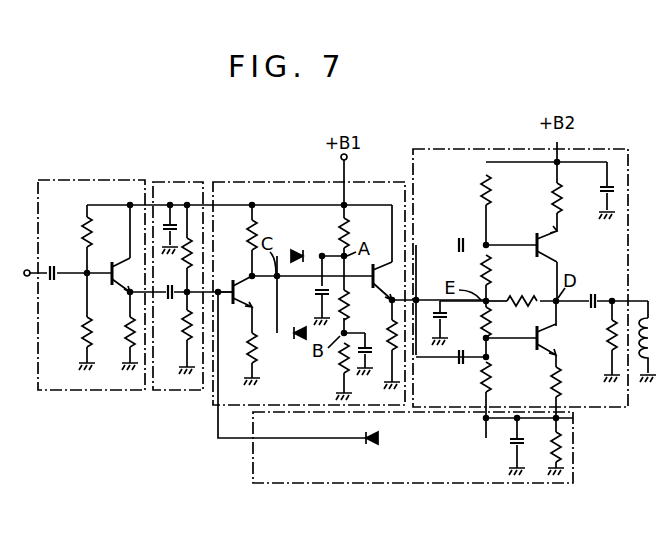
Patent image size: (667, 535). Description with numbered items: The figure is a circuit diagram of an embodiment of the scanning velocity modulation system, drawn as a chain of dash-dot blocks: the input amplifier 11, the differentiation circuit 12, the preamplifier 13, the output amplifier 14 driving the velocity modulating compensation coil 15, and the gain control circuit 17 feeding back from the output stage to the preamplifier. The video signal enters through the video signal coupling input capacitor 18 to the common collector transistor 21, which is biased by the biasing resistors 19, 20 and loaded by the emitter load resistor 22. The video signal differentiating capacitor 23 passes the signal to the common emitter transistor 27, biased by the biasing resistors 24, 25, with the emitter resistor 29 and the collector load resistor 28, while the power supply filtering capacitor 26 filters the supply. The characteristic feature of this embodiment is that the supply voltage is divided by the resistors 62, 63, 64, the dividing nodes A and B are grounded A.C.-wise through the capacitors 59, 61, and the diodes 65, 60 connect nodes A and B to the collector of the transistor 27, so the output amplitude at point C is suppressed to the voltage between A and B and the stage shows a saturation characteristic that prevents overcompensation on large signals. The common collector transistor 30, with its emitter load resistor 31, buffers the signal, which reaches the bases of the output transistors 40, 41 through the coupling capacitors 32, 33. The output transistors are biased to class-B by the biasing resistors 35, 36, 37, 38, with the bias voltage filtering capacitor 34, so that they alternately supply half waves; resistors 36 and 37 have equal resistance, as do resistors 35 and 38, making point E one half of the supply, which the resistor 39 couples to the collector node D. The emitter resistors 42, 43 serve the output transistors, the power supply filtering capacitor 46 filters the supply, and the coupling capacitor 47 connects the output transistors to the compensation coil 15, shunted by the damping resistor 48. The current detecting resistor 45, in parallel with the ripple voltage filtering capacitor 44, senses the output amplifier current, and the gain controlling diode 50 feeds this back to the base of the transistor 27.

The amplifier 11 is at (77, 180).
The differentiation circuit 12 is at (162, 182).
The preamplifier 13 is at (282, 182).
The output amplifier 14 is at (478, 149).
The velocity modulating compensation coil 15 is at (646, 321).
The gain control circuit 17 is at (253, 466).
The video signal coupling input capacitor 18 is at (53, 266).
The biasing resistor 19 is at (80, 325).
The biasing resistor 20 is at (91, 232).
The common collector transistor 21 is at (121, 262).
The emitter load resistor 22 is at (126, 335).
The video signal differentiating capacitor 23 is at (169, 299).
The biasing resistor 24 is at (184, 256).
The biasing resistor 25 is at (184, 331).
The power supply filtering capacitor 26 is at (168, 223).
The common emitter transistor 27 is at (240, 293).
The collector load resistor 28 is at (250, 234).
The emitter resistor 29 is at (250, 347).
The common collector transistor 30 is at (380, 284).
The emitter load resistor 31 is at (396, 370).
The coupling capacitor 32 is at (460, 240).
The coupling capacitor 33 is at (462, 362).
The bias voltage filtering capacitor 34 is at (446, 319).
The biasing resistor 35 is at (480, 187).
The biasing resistor 36 is at (480, 273).
The biasing resistor 37 is at (492, 319).
The biasing resistor 38 is at (492, 377).
The biasing resistor 39 is at (531, 298).
The output transistor 40 is at (553, 246).
The output transistor 41 is at (546, 339).
The emitter resistor 42 is at (551, 191).
The emitter resistor 43 is at (562, 385).
The ripple voltage filtering capacitor 44 is at (506, 443).
The current detecting resistor 45 is at (566, 444).
The power supply filtering capacitor 46 is at (599, 190).
The coupling capacitor 47 is at (595, 293).
The damping resistor 48 is at (608, 343).
The gain controlling diode 50 is at (374, 446).
The capacitor 59 is at (316, 292).
The diode 60 is at (298, 340).
The capacitor 61 is at (360, 372).
The resistor 62 is at (350, 228).
The resistor 63 is at (349, 307).
The resistor 64 is at (341, 361).
The diode 65 is at (302, 251).